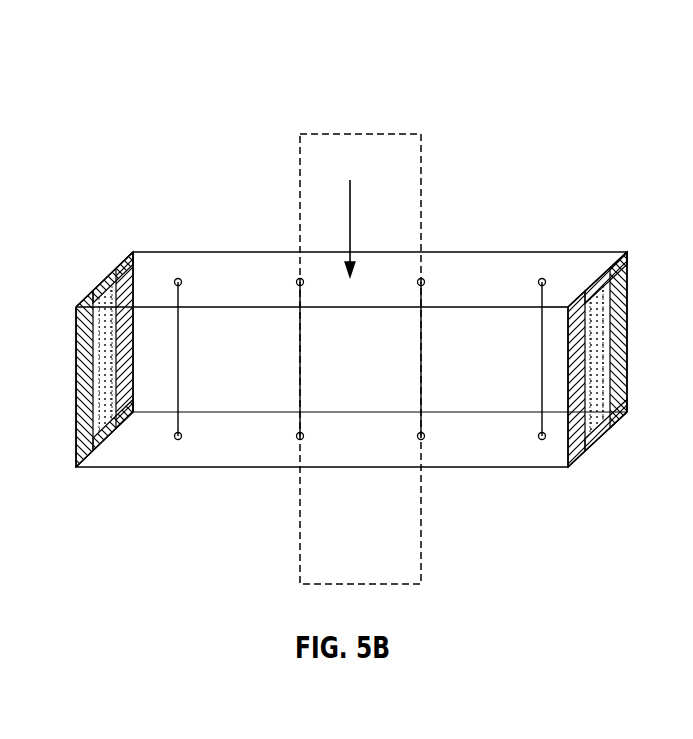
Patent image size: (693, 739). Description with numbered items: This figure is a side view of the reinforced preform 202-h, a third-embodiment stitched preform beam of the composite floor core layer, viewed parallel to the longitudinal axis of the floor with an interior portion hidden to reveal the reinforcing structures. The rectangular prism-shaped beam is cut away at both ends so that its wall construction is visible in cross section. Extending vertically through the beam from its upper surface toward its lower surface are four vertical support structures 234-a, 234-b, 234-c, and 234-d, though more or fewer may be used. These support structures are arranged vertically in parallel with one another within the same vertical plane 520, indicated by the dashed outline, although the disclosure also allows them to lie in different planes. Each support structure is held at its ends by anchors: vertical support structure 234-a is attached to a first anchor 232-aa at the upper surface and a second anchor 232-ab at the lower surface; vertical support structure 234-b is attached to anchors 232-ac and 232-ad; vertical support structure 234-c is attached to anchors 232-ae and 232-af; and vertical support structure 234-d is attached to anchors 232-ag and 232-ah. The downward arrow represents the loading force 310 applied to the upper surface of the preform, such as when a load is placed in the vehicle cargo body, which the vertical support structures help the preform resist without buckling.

The reinforced preform 202-h is at (570, 134).
The vertical support structure 234-a is at (547, 298).
The vertical support structure 234-b is at (425, 299).
The vertical support structure 234-c is at (296, 300).
The vertical support structure 234-d is at (173, 302).
The first anchor 232-aa is at (542, 278).
The second anchor 232-ab is at (542, 440).
The anchor 232-ac is at (421, 278).
The anchor 232-ad is at (421, 440).
The anchor 232-ae is at (300, 278).
The anchor 232-af is at (300, 440).
The anchor 232-ag is at (178, 278).
The anchor 232-ah is at (178, 440).
The loading force 310 is at (352, 207).
The vertical plane 520 is at (423, 570).